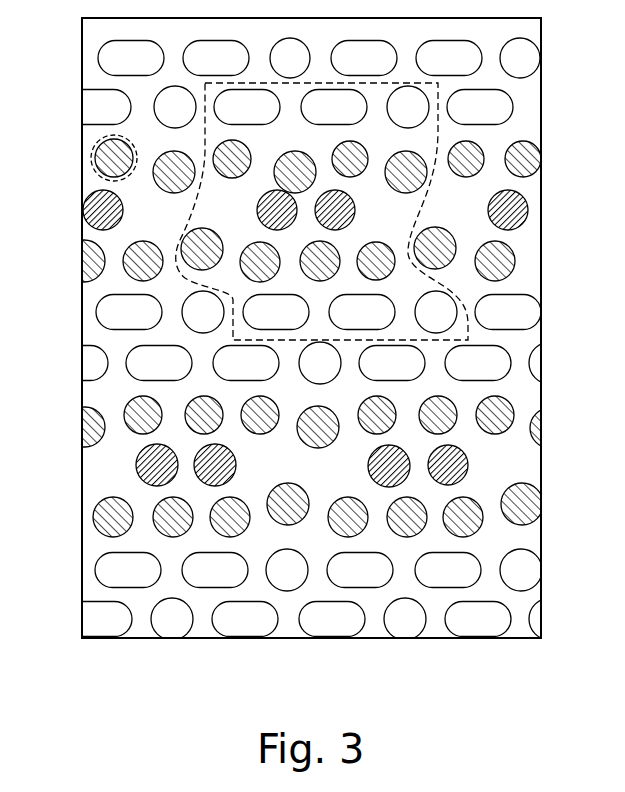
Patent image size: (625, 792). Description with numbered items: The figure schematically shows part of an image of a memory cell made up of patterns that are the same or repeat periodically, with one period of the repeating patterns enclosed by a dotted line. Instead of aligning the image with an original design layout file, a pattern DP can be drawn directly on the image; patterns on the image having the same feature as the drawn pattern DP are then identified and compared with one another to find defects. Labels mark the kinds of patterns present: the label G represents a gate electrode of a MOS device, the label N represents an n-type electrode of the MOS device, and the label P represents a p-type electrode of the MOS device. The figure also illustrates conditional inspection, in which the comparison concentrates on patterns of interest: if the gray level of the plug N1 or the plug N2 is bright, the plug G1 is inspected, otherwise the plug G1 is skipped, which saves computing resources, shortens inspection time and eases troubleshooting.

The drawn pattern DP is at (93, 156).
The n-type electrode of MOS N is at (535, 158).
The gate electrode of MOS G is at (523, 209).
The p-type electrode of MOS P is at (525, 310).
The plug G1 is at (266, 208).
The plug N1 is at (257, 254).
The plug N2 is at (317, 254).